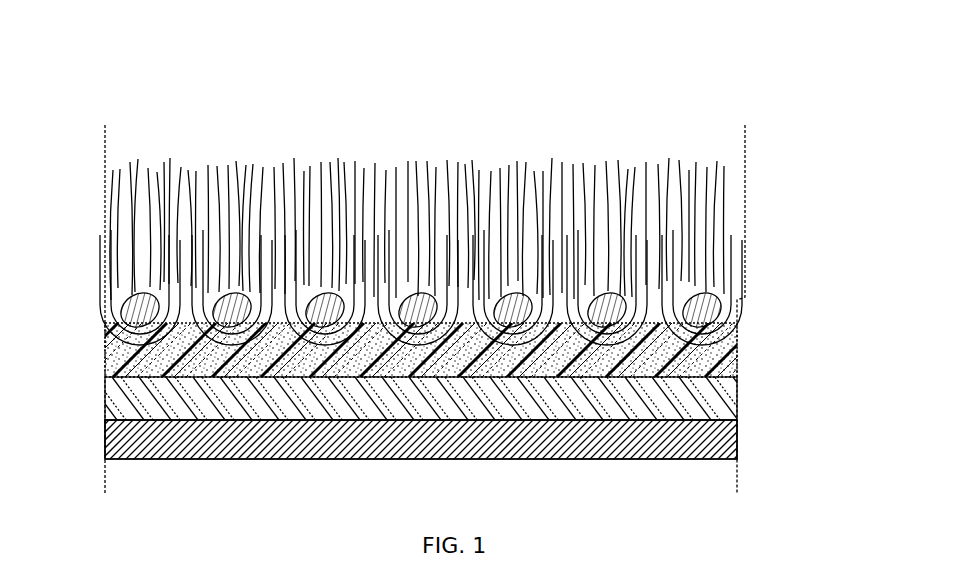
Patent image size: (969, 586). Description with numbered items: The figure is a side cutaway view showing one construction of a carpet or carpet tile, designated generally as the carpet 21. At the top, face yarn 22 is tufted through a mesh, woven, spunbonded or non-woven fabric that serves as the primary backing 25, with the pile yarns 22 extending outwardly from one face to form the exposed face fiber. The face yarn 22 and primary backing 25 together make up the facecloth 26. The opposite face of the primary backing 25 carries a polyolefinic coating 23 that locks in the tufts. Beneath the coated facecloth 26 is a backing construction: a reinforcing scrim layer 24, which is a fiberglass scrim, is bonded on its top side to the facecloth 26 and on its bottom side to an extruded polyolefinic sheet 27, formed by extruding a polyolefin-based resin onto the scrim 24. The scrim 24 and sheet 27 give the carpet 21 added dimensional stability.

The carpet 21 is at (537, 86).
The face yarn 22 is at (660, 215).
The polyolefinic coating 23 is at (105, 352).
The reinforcing scrim layer 24 is at (735, 385).
The primary backing 25 is at (482, 310).
The facecloth 26 is at (514, 252).
The extruded polyolefinic sheet 27 is at (713, 432).